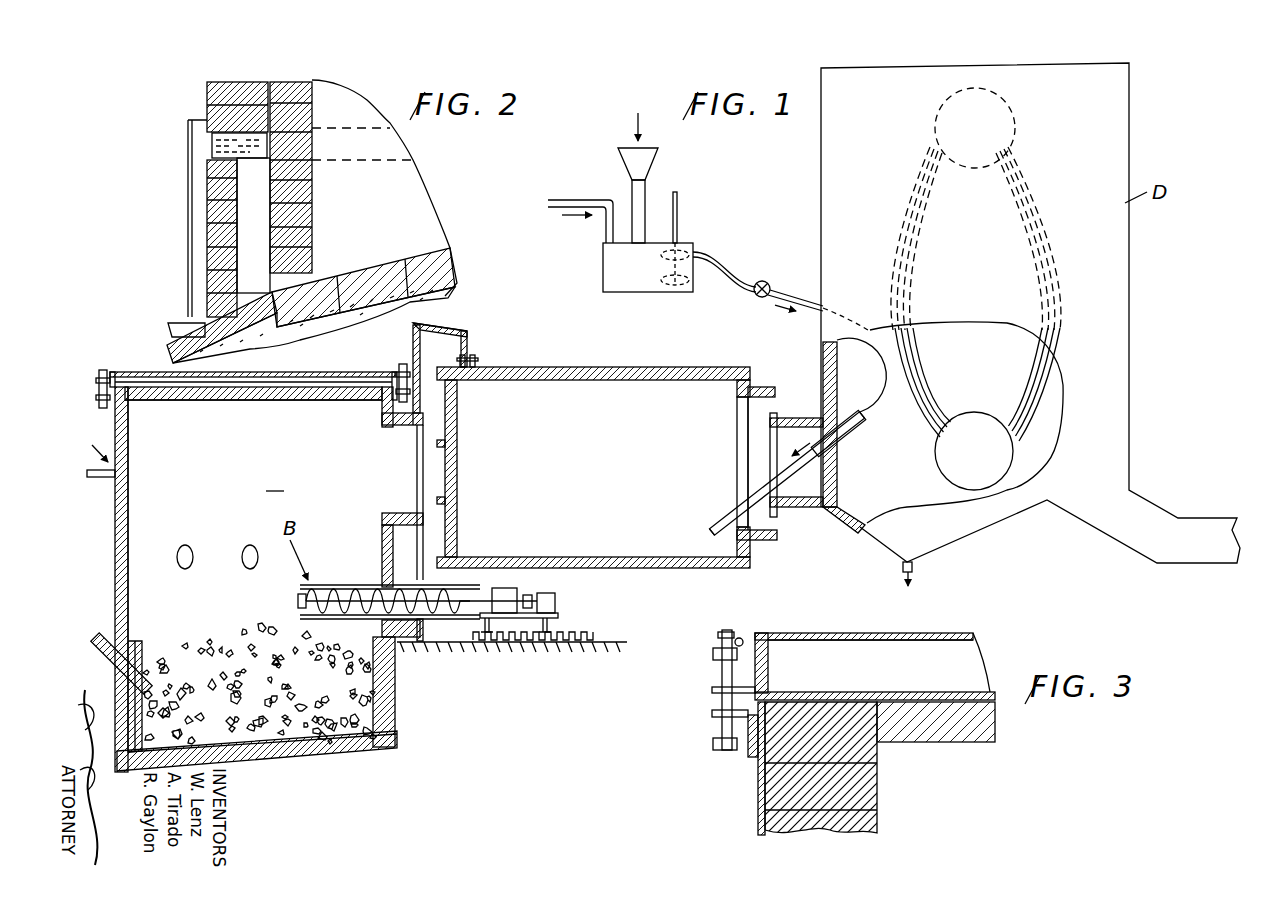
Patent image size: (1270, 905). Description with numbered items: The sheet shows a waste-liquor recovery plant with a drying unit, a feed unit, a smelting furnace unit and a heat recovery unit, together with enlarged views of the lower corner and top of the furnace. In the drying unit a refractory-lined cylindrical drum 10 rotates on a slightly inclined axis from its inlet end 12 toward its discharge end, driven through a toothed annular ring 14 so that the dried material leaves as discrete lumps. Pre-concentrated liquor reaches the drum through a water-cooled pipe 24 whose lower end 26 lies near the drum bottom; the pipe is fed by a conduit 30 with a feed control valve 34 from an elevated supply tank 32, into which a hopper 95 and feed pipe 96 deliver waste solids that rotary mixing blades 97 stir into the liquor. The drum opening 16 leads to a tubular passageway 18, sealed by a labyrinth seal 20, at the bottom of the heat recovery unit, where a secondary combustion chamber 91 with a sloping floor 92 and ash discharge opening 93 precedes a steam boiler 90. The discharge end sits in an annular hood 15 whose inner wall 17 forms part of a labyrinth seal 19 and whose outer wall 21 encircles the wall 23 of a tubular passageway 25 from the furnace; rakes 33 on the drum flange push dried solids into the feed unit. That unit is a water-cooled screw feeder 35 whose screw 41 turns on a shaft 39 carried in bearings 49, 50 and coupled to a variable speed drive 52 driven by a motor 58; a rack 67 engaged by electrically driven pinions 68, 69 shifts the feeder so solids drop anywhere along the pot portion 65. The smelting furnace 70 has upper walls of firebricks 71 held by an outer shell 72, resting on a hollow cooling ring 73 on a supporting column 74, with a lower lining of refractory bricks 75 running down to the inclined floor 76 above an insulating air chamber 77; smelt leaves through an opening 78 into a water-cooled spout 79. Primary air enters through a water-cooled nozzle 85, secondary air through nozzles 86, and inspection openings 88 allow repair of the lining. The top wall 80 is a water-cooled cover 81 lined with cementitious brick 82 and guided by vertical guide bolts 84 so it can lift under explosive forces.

In FIG. 1, the cylindrical drum 10 is at (607, 460).
In FIG. 1, the inlet end 12 is at (746, 568).
In FIG. 1, the toothed annular ring 14 is at (748, 367).
In FIG. 1, the annular hood 15 is at (440, 326).
In FIG. 1, the opening 16 is at (737, 419).
In FIG. 1, the inner wall 17 is at (468, 335).
In FIG. 1, the tubular passageway 18 is at (797, 508).
In FIG. 1, the labyrinth seal 19 is at (472, 362).
In FIG. 1, the labyrinth seal 20 is at (777, 394).
In FIG. 1, the outer wall 21 is at (413, 355).
In FIG. 1, the wall 23 is at (402, 425).
In FIG. 1, the tubular passageway 25 is at (415, 480).
In FIG. 1, the water-cooled pipe 24 is at (733, 508).
In FIG. 1, the lower end 26 is at (706, 530).
In FIG. 1, the conduit 30 is at (789, 297).
In FIG. 1, the supply tank 32 is at (603, 262).
In FIG. 1, the rakes 33 is at (448, 500).
In FIG. 1, the feed control valve 34 is at (758, 283).
In FIG. 1, the water-cooled screw feeder 35 is at (328, 570).
In FIG. 1, the shaft 39 is at (342, 630).
In FIG. 1, the screw 41 is at (360, 588).
In FIG. 1, the bearing 49 is at (296, 600).
In FIG. 1, the bearing 50 is at (535, 574).
In FIG. 1, the variable speed drive 52 is at (520, 575).
In FIG. 1, the motor 58 is at (552, 593).
In FIG. 1, the pot portion 65 is at (225, 650).
In FIG. 1, the rack 67 is at (552, 645).
In FIG. 1, the pinion 68 is at (500, 655).
In FIG. 1, the pinion 69 is at (552, 626).
In FIG. 1, the smelting furnace 70 is at (237, 545).
In FIG. 1, the firebricks 71 is at (129, 452).
In FIG. 2, the firebricks 71 is at (233, 82).
In FIG. 3, the firebricks 71 is at (860, 788).
In FIG. 3, the outer shell 72 is at (757, 786).
In FIG. 1, the hollow ring 73 is at (143, 660).
In FIG. 2, the hollow ring 73 is at (212, 146).
In FIG. 2, the supporting column 74 is at (197, 198).
In FIG. 1, the refractory bricks 75 is at (120, 635).
In FIG. 2, the refractory bricks 75 is at (300, 193).
In FIG. 2, the inclined floor 76 is at (385, 268).
In FIG. 1, the air chamber 77 is at (145, 688).
In FIG. 2, the air chamber 77 is at (240, 213).
In FIG. 1, the opening 78 is at (182, 745).
In FIG. 2, the opening 78 is at (310, 282).
In FIG. 2, the spout 79 is at (203, 315).
In FIG. 1, the top wall 80 is at (133, 362).
In FIG. 3, the top wall 80 is at (812, 632).
In FIG. 1, the water-cooled cover 81 is at (244, 382).
In FIG. 3, the water-cooled cover 81 is at (902, 660).
In FIG. 1, the cementitious brick 82 is at (300, 392).
In FIG. 3, the cementitious brick 82 is at (995, 726).
In FIG. 3, the guide bolts 84 is at (722, 728).
In FIG. 1, the water-cooled nozzle 85 is at (129, 605).
In FIG. 1, the nozzles 86 is at (96, 477).
In FIG. 1, the inspection openings 88 is at (244, 547).
In FIG. 1, the steam boiler 90 is at (1130, 272).
In FIG. 1, the secondary combustion chamber 91 is at (836, 178).
In FIG. 1, the floor 92 is at (862, 532).
In FIG. 1, the discharge opening 93 is at (914, 566).
In FIG. 1, the hopper 95 is at (624, 158).
In FIG. 1, the feed pipe 96 is at (648, 192).
In FIG. 1, the rotary mixing blades 97 is at (685, 250).